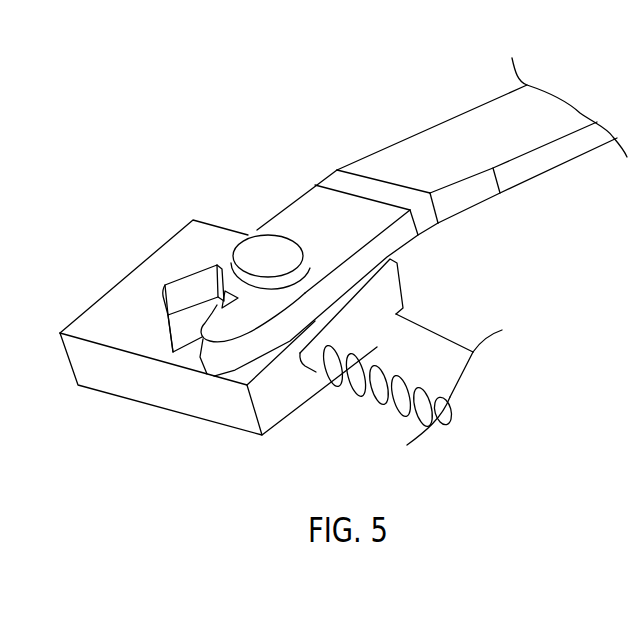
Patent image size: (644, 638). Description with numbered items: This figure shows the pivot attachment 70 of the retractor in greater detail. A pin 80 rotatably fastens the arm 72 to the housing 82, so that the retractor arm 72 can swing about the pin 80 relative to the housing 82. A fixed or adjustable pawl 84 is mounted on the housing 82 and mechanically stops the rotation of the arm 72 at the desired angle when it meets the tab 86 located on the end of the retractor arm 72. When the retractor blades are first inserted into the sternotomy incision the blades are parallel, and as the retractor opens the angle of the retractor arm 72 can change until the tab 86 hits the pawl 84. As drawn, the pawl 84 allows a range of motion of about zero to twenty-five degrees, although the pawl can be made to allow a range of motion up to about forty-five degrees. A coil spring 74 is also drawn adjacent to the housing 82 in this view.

The pivot attachment 70 is at (235, 165).
The arm 72 is at (452, 117).
The spring 74 is at (445, 357).
The pin 80 is at (270, 262).
The housing 82 is at (231, 327).
The pawl 84 is at (188, 283).
The tab 86 is at (226, 355).